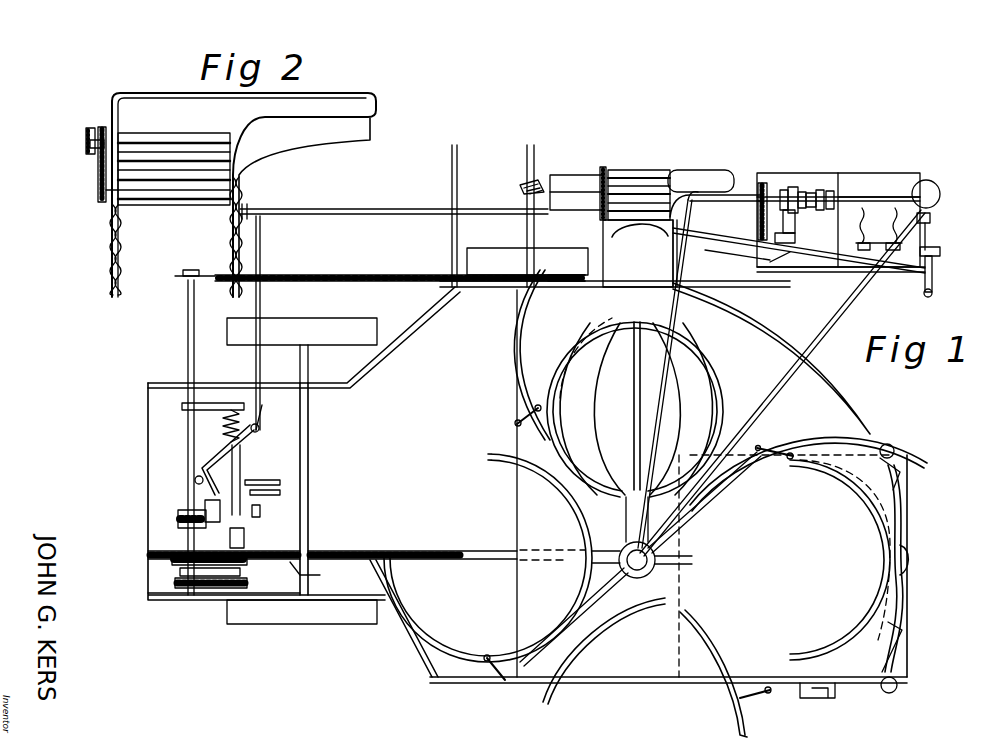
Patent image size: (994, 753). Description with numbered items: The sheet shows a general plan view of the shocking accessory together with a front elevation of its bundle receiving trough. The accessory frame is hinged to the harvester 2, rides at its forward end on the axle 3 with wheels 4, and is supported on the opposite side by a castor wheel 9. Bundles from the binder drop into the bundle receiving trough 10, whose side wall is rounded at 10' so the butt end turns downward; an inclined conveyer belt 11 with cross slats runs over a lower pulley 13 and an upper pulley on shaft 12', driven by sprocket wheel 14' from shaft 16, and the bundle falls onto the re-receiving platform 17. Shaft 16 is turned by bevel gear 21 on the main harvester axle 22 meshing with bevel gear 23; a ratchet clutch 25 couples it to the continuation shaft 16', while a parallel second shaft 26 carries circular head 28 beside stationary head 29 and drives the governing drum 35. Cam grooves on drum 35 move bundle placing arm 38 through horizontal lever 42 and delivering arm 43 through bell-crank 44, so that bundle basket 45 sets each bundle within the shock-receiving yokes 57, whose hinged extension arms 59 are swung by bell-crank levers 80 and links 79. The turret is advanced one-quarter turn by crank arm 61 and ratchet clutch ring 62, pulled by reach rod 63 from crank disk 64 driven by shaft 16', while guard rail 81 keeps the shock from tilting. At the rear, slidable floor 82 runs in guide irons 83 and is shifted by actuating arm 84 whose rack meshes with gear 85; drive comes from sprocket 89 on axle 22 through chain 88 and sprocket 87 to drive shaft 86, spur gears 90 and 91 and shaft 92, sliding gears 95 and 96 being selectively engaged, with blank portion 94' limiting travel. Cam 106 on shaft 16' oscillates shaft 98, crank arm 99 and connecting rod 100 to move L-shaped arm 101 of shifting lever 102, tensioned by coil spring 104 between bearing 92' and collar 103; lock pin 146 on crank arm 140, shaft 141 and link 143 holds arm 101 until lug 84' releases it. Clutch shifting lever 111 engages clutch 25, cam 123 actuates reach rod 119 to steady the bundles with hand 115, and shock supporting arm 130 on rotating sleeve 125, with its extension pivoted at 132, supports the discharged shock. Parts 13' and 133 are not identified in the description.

In FIG. 1, the harvester 2 is at (460, 255).
In FIG. 1, the axle 3 is at (308, 445).
In FIG. 1, the wheels 4 is at (355, 318).
In FIG. 1, the castor wheel 9 is at (835, 693).
In FIG. 2, the bundle receiving trough 10 is at (244, 185).
In FIG. 1, the bundle receiving trough 10 is at (704, 168).
In FIG. 2, the rounded portion of trough side wall 10' is at (304, 187).
In FIG. 1, the rounded portion of trough side wall 10' is at (715, 175).
In FIG. 2, the inclined conveyer belt 11 is at (165, 150).
In FIG. 1, the inclined conveyer belt 11 is at (645, 178).
In FIG. 2, the shaft 12' is at (77, 145).
In FIG. 2, the lower pulley 13 is at (154, 237).
In FIG. 2, the toothed rack 13' is at (90, 165).
In FIG. 2, the sprocket wheel 14' is at (76, 128).
In FIG. 1, the shaft 16 is at (841, 205).
In FIG. 1, the continuation shaft 16' is at (884, 167).
In FIG. 1, the bundle re-receiving platform 17 is at (603, 255).
In FIG. 1, the bevel gear 21 is at (518, 186).
In FIG. 1, the main harvester axle 22 is at (536, 150).
In FIG. 1, the bevel gear 23 is at (552, 176).
In FIG. 1, the disengaging ratchet clutch 25 is at (813, 190).
In FIG. 1, the second shaft 26 is at (822, 238).
In FIG. 1, the circular head 28 is at (796, 232).
In FIG. 1, the stationary head 29 is at (777, 257).
In FIG. 1, the governing drum 35 is at (932, 222).
In FIG. 1, the bundle placing arm 38 is at (726, 257).
In FIG. 1, the pivoted horizontal lever 42 is at (934, 275).
In FIG. 1, the delivering arm 43 is at (735, 228).
In FIG. 1, the bell-crank 44 is at (940, 252).
In FIG. 1, the bundle basket 45 is at (660, 228).
In FIG. 1, the shock-receiving yokes 57 is at (590, 492).
In FIG. 1, the hinged extension arm 59 is at (528, 322).
In FIG. 1, the crank arm 61 is at (612, 556).
In FIG. 1, the ratchet clutch ring 62 is at (625, 568).
In FIG. 1, the reach rod 63 is at (850, 302).
In FIG. 1, the horizontal crank disk 64 is at (934, 180).
In FIG. 1, the horizontal link 79 is at (700, 540).
In FIG. 1, the bell-crank lever 80 is at (532, 412).
In FIG. 1, the guard rail 81 is at (795, 355).
In FIG. 1, the longitudinally slidable floor 82 is at (908, 512).
In FIG. 1, the guide irons 83 is at (900, 465).
In FIG. 1, the actuating arm 84 is at (412, 538).
In FIG. 1, the lug 84' is at (247, 536).
In FIG. 1, the actuating gear 85 is at (175, 560).
In FIG. 1, the lateral drive shaft 86 is at (188, 434).
In FIG. 1, the sprocket gear 87 is at (185, 275).
In FIG. 1, the chain 88 is at (335, 280).
In FIG. 1, the sprocket gear 89 is at (560, 280).
In FIG. 1, the spur gear 90 is at (160, 600).
In FIG. 1, the second spur gear 91 is at (238, 590).
In FIG. 1, the shaft 92 is at (249, 480).
In FIG. 1, the stationary bearing 92' is at (276, 388).
In FIG. 1, the blank portion 94' is at (257, 533).
In FIG. 1, the sliding gear 95 is at (178, 521).
In FIG. 1, the sliding gear 96 is at (258, 512).
In FIG. 1, the oscillating longitudinal shaft 98 is at (398, 200).
In FIG. 1, the vertical crank arm 99 is at (250, 208).
In FIG. 1, the connecting rod 100 is at (262, 268).
In FIG. 1, the L-shaped arm 101 is at (224, 452).
In FIG. 1, the gear shifting lever 102 is at (212, 505).
In FIG. 1, the collar 103 is at (258, 432).
In FIG. 1, the coil spring 104 is at (225, 404).
In FIG. 1, the cam 106 is at (822, 190).
In FIG. 1, the clutch shifting lever 111 is at (790, 190).
In FIG. 1, the hand 115 is at (567, 437).
In FIG. 1, the actuating reach rod 119 is at (686, 263).
In FIG. 1, the cam 123 is at (838, 190).
In FIG. 1, the rotating sleeve 125 is at (897, 450).
In FIG. 1, the shock supporting arm 130 is at (878, 512).
In FIG. 1, the pivot point 132 is at (902, 598).
In FIG. 1, the rack 133 is at (605, 168).
In FIG. 1, the crank arm 140 is at (262, 480).
In FIG. 1, the lateral shaft 141 is at (268, 492).
In FIG. 1, the link 143 is at (305, 566).
In FIG. 1, the lock pin 146 is at (195, 478).